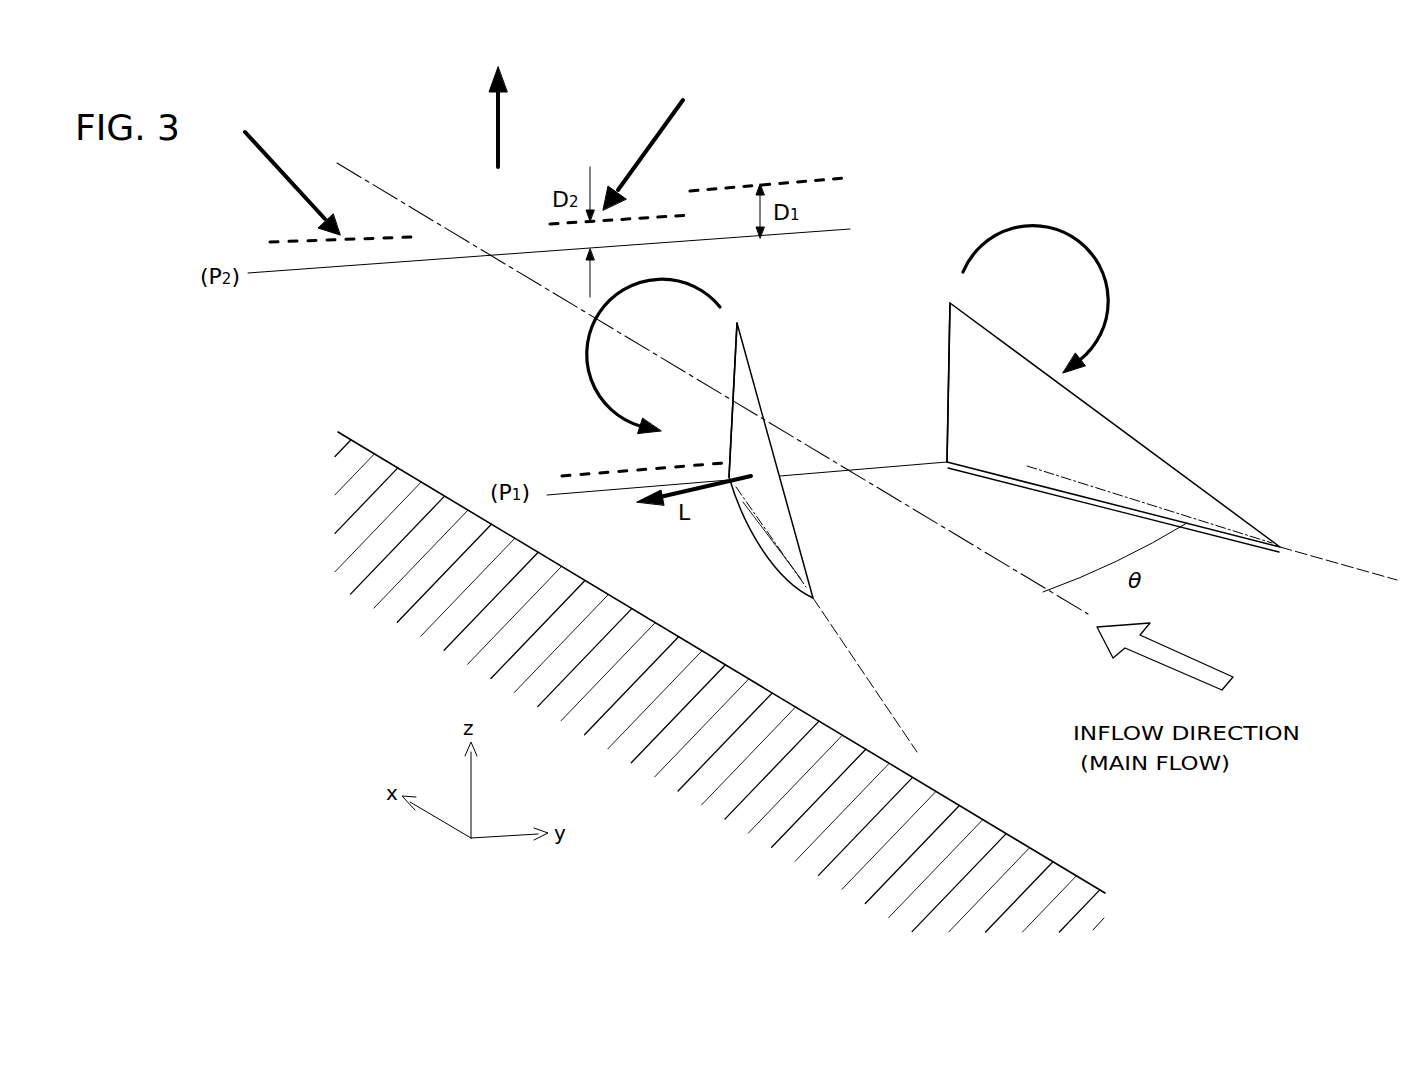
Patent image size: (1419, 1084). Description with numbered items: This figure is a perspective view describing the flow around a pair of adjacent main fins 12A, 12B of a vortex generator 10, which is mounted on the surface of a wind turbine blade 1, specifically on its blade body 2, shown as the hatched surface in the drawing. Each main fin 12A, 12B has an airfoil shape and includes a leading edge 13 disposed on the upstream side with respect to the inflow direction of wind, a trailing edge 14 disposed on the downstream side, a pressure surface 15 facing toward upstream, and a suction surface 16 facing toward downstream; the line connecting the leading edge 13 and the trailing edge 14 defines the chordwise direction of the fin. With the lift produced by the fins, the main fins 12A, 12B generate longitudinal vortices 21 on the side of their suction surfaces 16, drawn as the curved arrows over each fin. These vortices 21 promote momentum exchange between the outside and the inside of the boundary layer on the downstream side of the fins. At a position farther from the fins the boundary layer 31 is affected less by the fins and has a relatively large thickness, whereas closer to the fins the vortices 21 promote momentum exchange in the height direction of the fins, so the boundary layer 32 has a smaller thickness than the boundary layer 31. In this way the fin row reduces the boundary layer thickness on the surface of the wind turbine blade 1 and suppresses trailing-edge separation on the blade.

The wind turbine blade 1 is at (720, 682).
The blade body 2 is at (835, 707).
The vortex generator 10 is at (1151, 310).
The main fin 12A is at (947, 340).
The main fin 12B is at (1031, 518).
The leading edge 13 is at (817, 600).
The trailing edge 14 is at (728, 438).
The pressure surface 15 is at (798, 521).
The suction surface 16 is at (750, 536).
The longitudinal vortex 21 is at (588, 360).
The boundary layer 31 is at (818, 178).
The boundary layer 32 is at (650, 213).